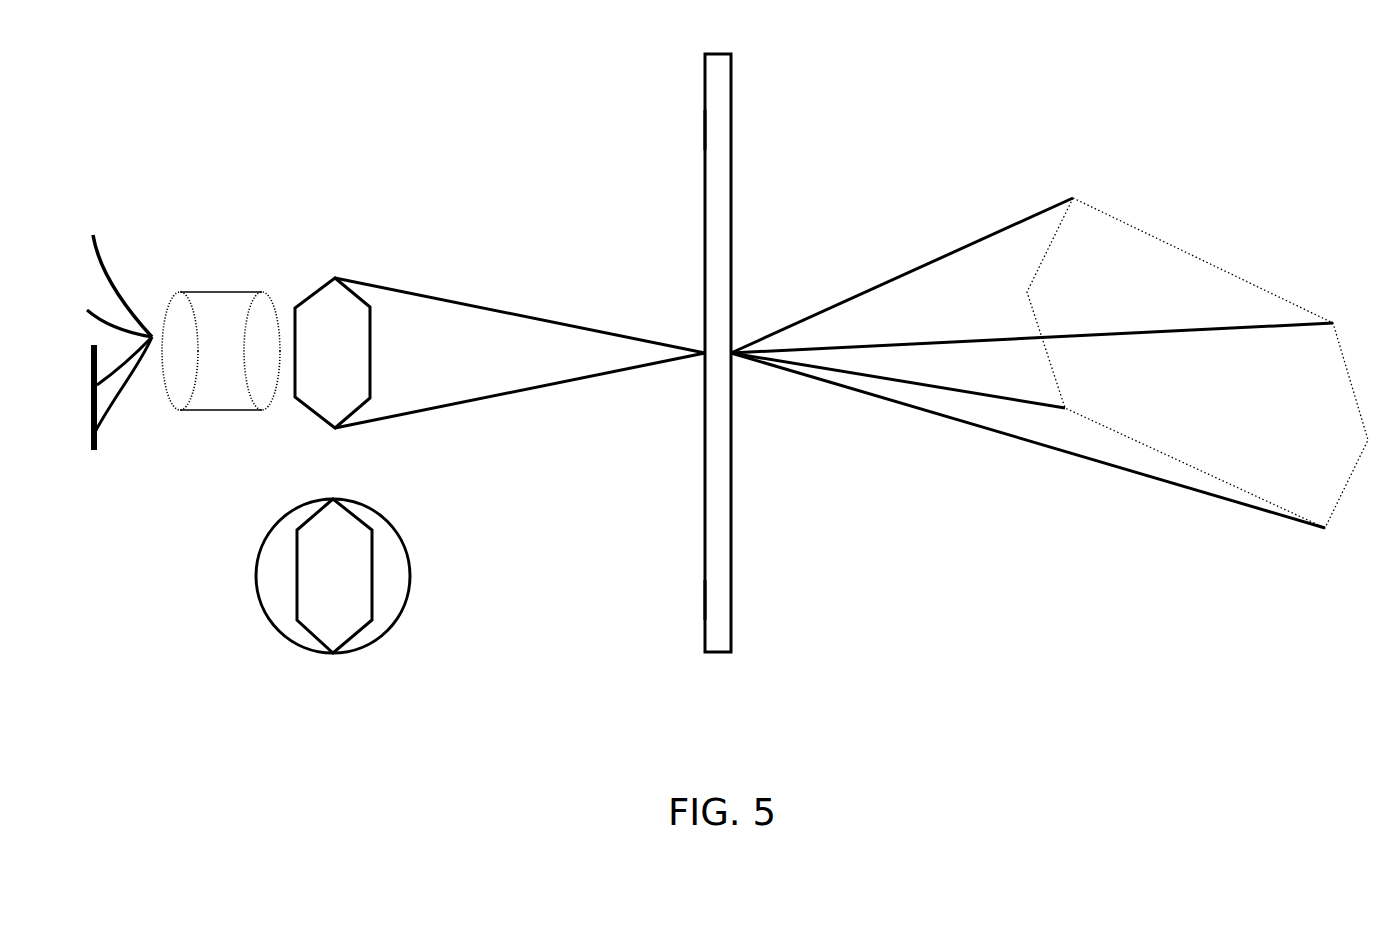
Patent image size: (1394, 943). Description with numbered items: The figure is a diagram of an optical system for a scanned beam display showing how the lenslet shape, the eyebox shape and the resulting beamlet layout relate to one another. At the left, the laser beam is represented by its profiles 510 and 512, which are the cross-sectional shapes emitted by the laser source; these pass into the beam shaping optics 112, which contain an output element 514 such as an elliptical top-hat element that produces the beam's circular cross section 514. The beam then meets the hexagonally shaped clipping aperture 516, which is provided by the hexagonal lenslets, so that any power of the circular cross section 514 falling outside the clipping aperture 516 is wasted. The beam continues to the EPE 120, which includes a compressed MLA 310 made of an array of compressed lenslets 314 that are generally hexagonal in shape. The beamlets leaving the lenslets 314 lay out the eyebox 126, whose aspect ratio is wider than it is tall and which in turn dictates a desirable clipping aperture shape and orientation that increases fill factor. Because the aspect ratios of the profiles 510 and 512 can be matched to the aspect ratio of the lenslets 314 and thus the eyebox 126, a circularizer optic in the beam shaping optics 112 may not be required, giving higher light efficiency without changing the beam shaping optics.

The beam shaping optics 112 is at (231, 264).
The EPE 120 is at (731, 80).
The eyebox 126 is at (1097, 212).
The compressed MLA 310 is at (731, 128).
The compressed lenslets 314 is at (731, 601).
The profile of the laser beam 510 is at (105, 262).
The profile of the laser beam 512 is at (105, 410).
The output element 514 is at (205, 410).
The clipping aperture 516 is at (325, 272).